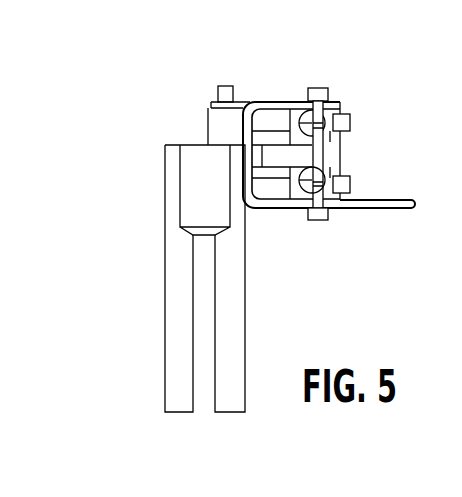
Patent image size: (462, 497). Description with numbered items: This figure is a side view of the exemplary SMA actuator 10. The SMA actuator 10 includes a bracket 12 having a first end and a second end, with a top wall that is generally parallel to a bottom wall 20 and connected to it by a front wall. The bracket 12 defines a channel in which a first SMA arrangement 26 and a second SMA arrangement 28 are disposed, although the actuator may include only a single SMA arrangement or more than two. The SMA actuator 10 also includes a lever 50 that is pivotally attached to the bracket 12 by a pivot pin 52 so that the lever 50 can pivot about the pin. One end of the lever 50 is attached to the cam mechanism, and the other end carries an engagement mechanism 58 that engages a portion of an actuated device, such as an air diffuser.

The SMA actuator 10 is at (357, 67).
The bracket 12 is at (280, 100).
The bottom wall 20 is at (353, 209).
The first SMA arrangement 26 is at (350, 124).
The second SMA arrangement 28 is at (350, 185).
The lever 50 is at (196, 180).
The pivot pin 52 is at (224, 85).
The engagement mechanism 58 is at (178, 392).